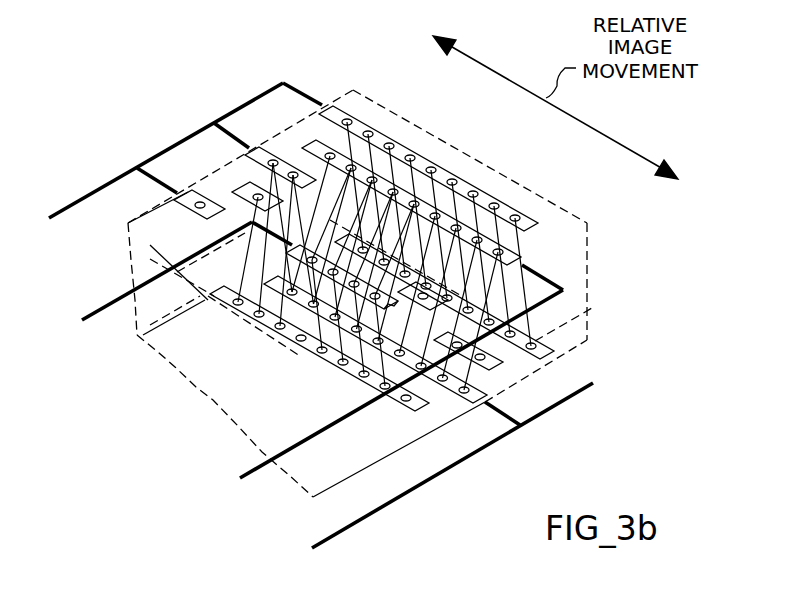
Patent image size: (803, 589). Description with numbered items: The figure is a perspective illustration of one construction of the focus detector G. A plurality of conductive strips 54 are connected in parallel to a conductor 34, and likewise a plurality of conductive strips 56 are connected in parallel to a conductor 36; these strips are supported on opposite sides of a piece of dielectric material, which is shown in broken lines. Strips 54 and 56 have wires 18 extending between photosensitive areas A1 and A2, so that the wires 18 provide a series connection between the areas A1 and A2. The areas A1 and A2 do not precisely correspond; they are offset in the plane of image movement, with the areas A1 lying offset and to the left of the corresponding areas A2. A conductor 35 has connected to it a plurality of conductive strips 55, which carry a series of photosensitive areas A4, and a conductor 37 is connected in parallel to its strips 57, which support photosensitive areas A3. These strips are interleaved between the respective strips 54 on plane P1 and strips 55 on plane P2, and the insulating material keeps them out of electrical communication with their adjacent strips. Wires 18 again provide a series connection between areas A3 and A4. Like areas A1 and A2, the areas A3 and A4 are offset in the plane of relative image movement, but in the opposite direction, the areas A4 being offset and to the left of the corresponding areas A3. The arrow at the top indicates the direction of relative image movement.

The wires 18 is at (277, 160).
The conductor 34 is at (107, 312).
The conductor 35 is at (72, 203).
The conductor 36 is at (270, 461).
The conductor 37 is at (348, 533).
The conductive strips 54 is at (298, 248).
The conductive strips 55 is at (318, 108).
The conductive strips 56 is at (507, 273).
The conductive strips 57 is at (484, 386).
The photosensitive areas A1 is at (284, 337).
The photosensitive areas A2 is at (353, 167).
The photosensitive areas A3 is at (538, 342).
The photosensitive areas A4 is at (453, 182).
The plane P1 is at (383, 460).
The plane P2 is at (537, 198).
The detector G is at (134, 588).